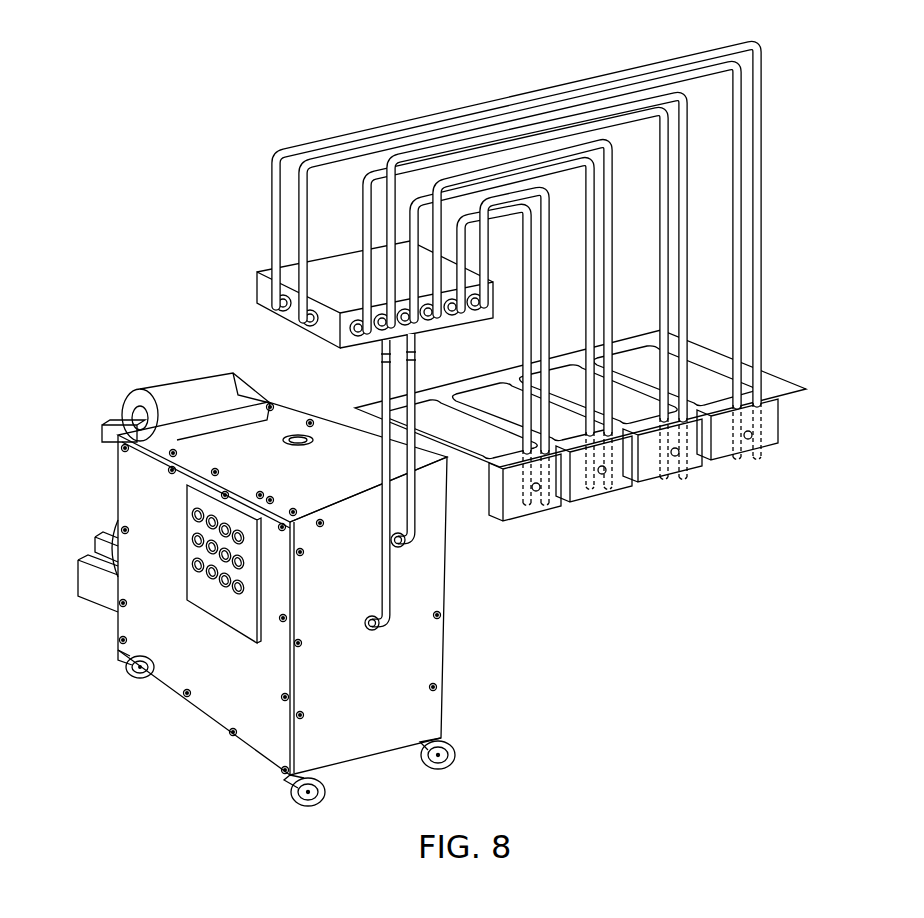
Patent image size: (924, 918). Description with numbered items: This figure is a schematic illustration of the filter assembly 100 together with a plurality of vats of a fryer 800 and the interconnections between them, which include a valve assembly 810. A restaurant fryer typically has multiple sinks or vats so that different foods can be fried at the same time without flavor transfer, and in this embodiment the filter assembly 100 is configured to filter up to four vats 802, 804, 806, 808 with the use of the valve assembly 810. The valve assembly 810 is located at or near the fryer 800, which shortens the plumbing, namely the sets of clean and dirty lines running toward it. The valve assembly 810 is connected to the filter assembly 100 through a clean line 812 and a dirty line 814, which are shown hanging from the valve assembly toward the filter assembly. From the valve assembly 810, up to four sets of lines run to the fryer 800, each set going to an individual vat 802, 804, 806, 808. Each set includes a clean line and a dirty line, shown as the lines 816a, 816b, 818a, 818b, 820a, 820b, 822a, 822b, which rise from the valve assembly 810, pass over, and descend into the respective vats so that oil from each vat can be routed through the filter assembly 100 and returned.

The filter assembly 100 is at (150, 512).
The fryer 800 is at (783, 232).
The vat 802 is at (718, 384).
The vat 804 is at (638, 390).
The vat 806 is at (575, 410).
The vat 808 is at (490, 430).
The valve assembly 810 is at (328, 282).
The clean line 812 is at (390, 605).
The dirty line 814 is at (418, 530).
The clean line 816a is at (284, 153).
The dirty line 816b is at (374, 147).
The clean line 818a is at (545, 142).
The dirty line 818b is at (453, 148).
The clean line 820a is at (592, 183).
The dirty line 820b is at (603, 145).
The clean line 822a is at (495, 298).
The dirty line 822b is at (521, 296).